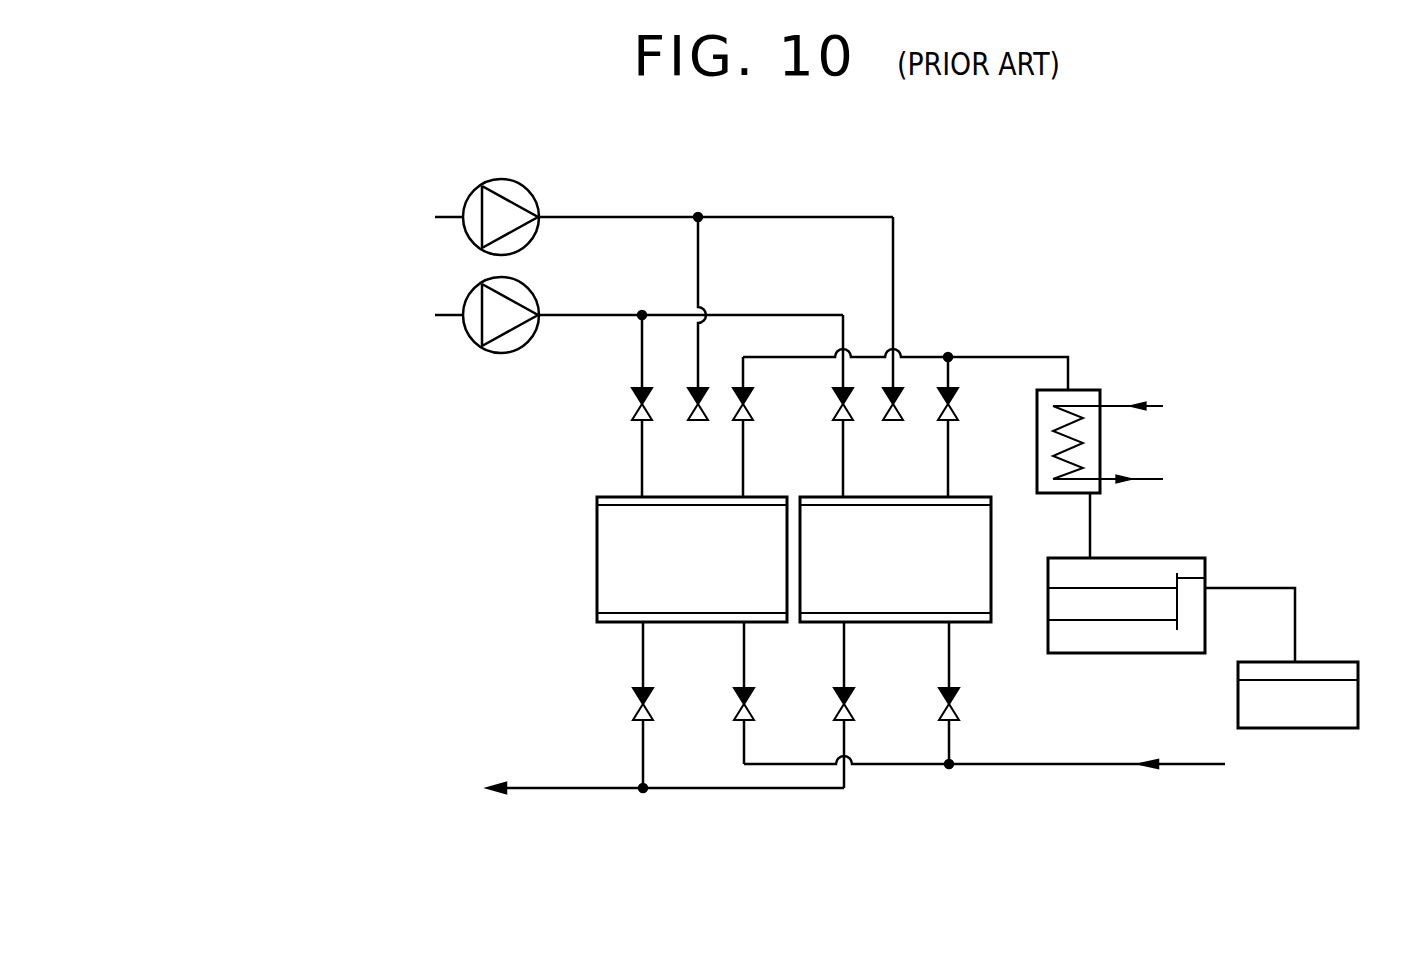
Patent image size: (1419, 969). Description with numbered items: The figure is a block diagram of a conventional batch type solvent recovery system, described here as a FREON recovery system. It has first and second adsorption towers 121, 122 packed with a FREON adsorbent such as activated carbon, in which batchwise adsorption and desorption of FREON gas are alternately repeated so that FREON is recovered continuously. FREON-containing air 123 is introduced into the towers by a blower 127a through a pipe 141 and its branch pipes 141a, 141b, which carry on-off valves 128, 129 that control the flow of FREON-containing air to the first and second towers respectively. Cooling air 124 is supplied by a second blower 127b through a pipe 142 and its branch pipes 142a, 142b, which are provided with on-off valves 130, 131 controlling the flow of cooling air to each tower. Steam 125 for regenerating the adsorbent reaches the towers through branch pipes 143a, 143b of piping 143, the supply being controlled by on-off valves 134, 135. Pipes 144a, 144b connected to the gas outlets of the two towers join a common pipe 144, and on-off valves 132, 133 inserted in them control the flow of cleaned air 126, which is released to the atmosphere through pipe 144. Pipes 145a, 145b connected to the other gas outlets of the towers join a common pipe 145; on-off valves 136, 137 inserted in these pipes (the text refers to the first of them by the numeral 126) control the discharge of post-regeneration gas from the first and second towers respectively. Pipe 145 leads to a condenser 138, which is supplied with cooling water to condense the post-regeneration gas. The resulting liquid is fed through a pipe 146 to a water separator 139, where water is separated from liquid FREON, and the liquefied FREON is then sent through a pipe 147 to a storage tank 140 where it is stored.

The first adsorption tower 121 is at (597, 532).
The second adsorption tower 122 is at (992, 548).
The flon-containing air 123 is at (388, 178).
The cooling air 124 is at (328, 331).
The steam 125 is at (1202, 787).
The on-off valve 126 is at (440, 807).
The blower 127a is at (528, 190).
The blower 127b is at (474, 343).
The on-off valve 128 is at (690, 390).
The on-off valve 129 is at (888, 420).
The on-off valve 130 is at (633, 390).
The on-off valve 131 is at (843, 390).
The on-off valve 132 is at (649, 712).
The on-off valve 133 is at (850, 712).
The on-off valve 134 is at (750, 712).
The on-off valve 135 is at (955, 718).
The valve 136 is at (737, 388).
The on-off valve 137 is at (943, 418).
The condenser 138 is at (1096, 390).
The water separator 139 is at (1190, 558).
The storage tank 140 is at (1238, 694).
The pipe 141 is at (618, 216).
The branch pipe 141a is at (700, 260).
The branch pipe 141b is at (895, 234).
The pipe 142 is at (591, 314).
The branch pipe 142a is at (641, 455).
The branch pipe 142b is at (843, 440).
The piping 143 is at (1093, 763).
The branch pipe 143a is at (746, 650).
The branch pipe 143b is at (951, 650).
The pipe 144 is at (572, 787).
The pipe 144a is at (645, 650).
The pipe 144b is at (846, 650).
The pipe 145 is at (1000, 356).
The pipe 145a is at (747, 477).
The pipe 145b is at (950, 453).
The pipe 146 is at (1092, 513).
The pipe 147 is at (1262, 588).